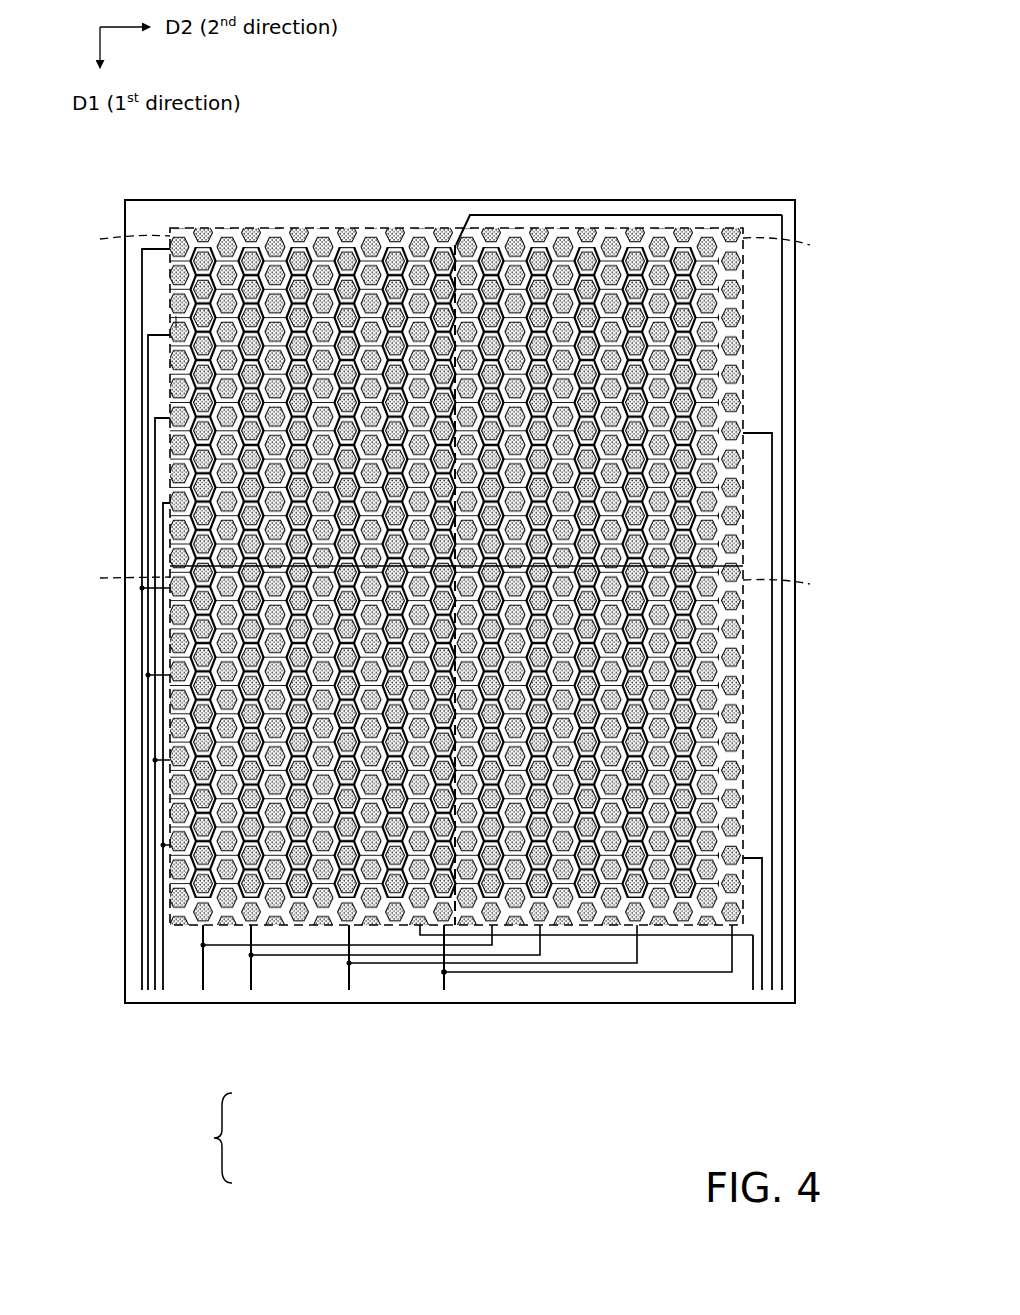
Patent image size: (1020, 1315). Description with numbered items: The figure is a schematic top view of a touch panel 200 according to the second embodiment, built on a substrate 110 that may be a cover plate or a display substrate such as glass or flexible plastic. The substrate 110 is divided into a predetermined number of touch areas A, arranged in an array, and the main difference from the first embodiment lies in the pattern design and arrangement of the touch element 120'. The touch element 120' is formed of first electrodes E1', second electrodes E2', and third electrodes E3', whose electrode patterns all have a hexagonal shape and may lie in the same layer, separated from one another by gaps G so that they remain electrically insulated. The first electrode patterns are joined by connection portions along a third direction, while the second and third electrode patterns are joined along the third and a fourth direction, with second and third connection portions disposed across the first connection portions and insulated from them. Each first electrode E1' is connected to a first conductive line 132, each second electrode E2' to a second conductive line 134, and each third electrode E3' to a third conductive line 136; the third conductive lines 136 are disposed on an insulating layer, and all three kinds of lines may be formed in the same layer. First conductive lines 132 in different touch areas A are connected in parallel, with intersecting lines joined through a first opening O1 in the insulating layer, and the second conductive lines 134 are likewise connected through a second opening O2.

The touch panel 200 is at (695, 1117).
The substrate 110 is at (796, 948).
The touch element 120' is at (250, 1138).
The first electrode E1' is at (506, 576).
The second electrode E2' is at (444, 527).
The third electrode E3' is at (460, 583).
The gap G is at (170, 322).
The touch area A is at (454, 411).
The first opening O1 is at (144, 676).
The second opening O2 is at (449, 978).
The first conductive line 132 is at (140, 993).
The second conductive line 134 is at (205, 992).
The third conductive line 136 is at (751, 993).